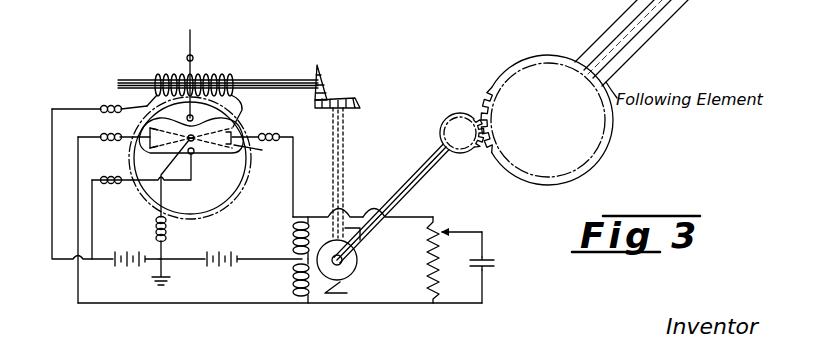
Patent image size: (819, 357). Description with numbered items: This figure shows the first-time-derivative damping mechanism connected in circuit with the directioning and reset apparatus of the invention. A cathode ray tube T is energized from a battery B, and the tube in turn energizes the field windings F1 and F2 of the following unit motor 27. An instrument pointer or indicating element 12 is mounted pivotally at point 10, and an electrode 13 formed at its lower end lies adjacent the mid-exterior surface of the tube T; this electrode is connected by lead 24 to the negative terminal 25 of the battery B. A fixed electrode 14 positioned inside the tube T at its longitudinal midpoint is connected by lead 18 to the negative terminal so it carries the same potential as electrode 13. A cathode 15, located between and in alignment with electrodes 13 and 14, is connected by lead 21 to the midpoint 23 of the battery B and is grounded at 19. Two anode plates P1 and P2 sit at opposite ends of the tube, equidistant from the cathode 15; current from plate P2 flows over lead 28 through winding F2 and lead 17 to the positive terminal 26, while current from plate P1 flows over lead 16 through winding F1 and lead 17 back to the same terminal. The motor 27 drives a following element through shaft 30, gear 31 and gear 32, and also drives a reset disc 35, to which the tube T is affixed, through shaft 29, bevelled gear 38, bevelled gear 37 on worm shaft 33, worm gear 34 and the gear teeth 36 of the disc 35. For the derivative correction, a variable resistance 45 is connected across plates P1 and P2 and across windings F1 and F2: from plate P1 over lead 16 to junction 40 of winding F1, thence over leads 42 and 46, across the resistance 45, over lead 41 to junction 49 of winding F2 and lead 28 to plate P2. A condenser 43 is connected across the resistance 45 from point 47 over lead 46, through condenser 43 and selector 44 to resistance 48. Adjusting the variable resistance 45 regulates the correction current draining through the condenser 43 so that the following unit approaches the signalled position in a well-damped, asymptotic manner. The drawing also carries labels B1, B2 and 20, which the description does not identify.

The pivot point 10 is at (191, 33).
The indicating element 12 is at (193, 57).
The electrode 13 is at (196, 115).
The fixed electrode 14 is at (197, 168).
The cathode 15 is at (194, 153).
The lead 16 is at (196, 303).
The lead 17 is at (251, 268).
The lead 18 is at (93, 223).
The ground 19 is at (167, 284).
The battery 20 is at (118, 266).
The lead 21 is at (162, 250).
The battery midpoint 23 is at (163, 262).
The lead 24 is at (52, 149).
The negative terminal 25 is at (111, 261).
The positive terminal 26 is at (254, 258).
The following unit motor 27 is at (361, 259).
The lead 28 is at (250, 178).
The shaft 29 is at (344, 171).
The shaft 30 is at (429, 163).
The gear 31 is at (452, 115).
The gear 32 is at (536, 70).
The worm shaft 33 is at (295, 80).
The worm gear 34 is at (230, 80).
The reset disc 35 is at (147, 107).
The gear teeth 36 is at (158, 80).
The bevelled gear 37 is at (327, 80).
The bevelled gear 38 is at (355, 100).
The junction 40 is at (298, 304).
The lead 41 is at (368, 208).
The lead 42 is at (365, 304).
The condenser 43 is at (494, 272).
The selector 44 is at (482, 238).
The variable resistance 45 is at (427, 270).
The lead 46 is at (485, 300).
The point 47 is at (433, 304).
The resistance 48 is at (434, 218).
The junction 49 is at (297, 217).
The beam plate B1 is at (147, 131).
The beam plate B2 is at (234, 127).
The anode plate P1 is at (147, 146).
The anode plate P2 is at (252, 134).
The cathode ray tube T is at (255, 154).
The battery B is at (146, 266).
The field winding F1 is at (292, 278).
The field winding F2 is at (292, 238).